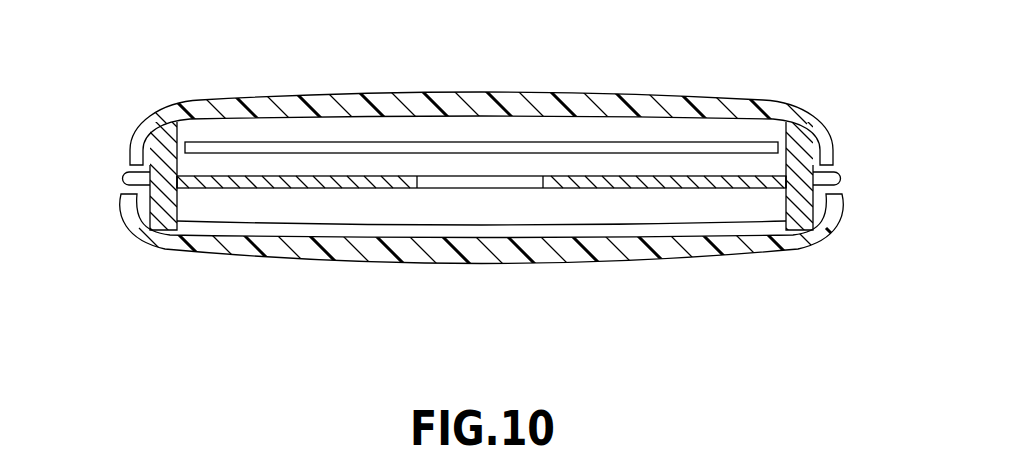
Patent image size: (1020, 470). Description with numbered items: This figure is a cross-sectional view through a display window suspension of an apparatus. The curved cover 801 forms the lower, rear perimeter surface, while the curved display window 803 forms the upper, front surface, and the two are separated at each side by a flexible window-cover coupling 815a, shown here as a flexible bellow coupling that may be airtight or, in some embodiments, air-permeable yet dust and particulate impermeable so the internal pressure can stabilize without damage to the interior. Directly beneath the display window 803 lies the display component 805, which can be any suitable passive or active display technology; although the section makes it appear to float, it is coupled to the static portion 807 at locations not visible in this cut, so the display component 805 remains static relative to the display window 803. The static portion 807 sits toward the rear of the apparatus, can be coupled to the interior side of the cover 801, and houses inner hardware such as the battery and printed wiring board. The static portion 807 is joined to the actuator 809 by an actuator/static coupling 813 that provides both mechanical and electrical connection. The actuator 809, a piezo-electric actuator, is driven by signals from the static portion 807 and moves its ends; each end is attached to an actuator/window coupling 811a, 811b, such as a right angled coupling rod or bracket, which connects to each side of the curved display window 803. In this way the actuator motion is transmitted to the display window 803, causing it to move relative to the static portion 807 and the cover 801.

The cover 801 is at (307, 243).
The display window 803 is at (348, 105).
The display component 805 is at (555, 130).
The static portion 807 is at (608, 212).
The actuator 809 is at (380, 162).
The actuator/window coupling 811a is at (178, 190).
The actuator/window coupling 811b is at (785, 190).
The actuator/static coupling 813 is at (502, 183).
The flexible window-cover coupling 815a is at (108, 156).